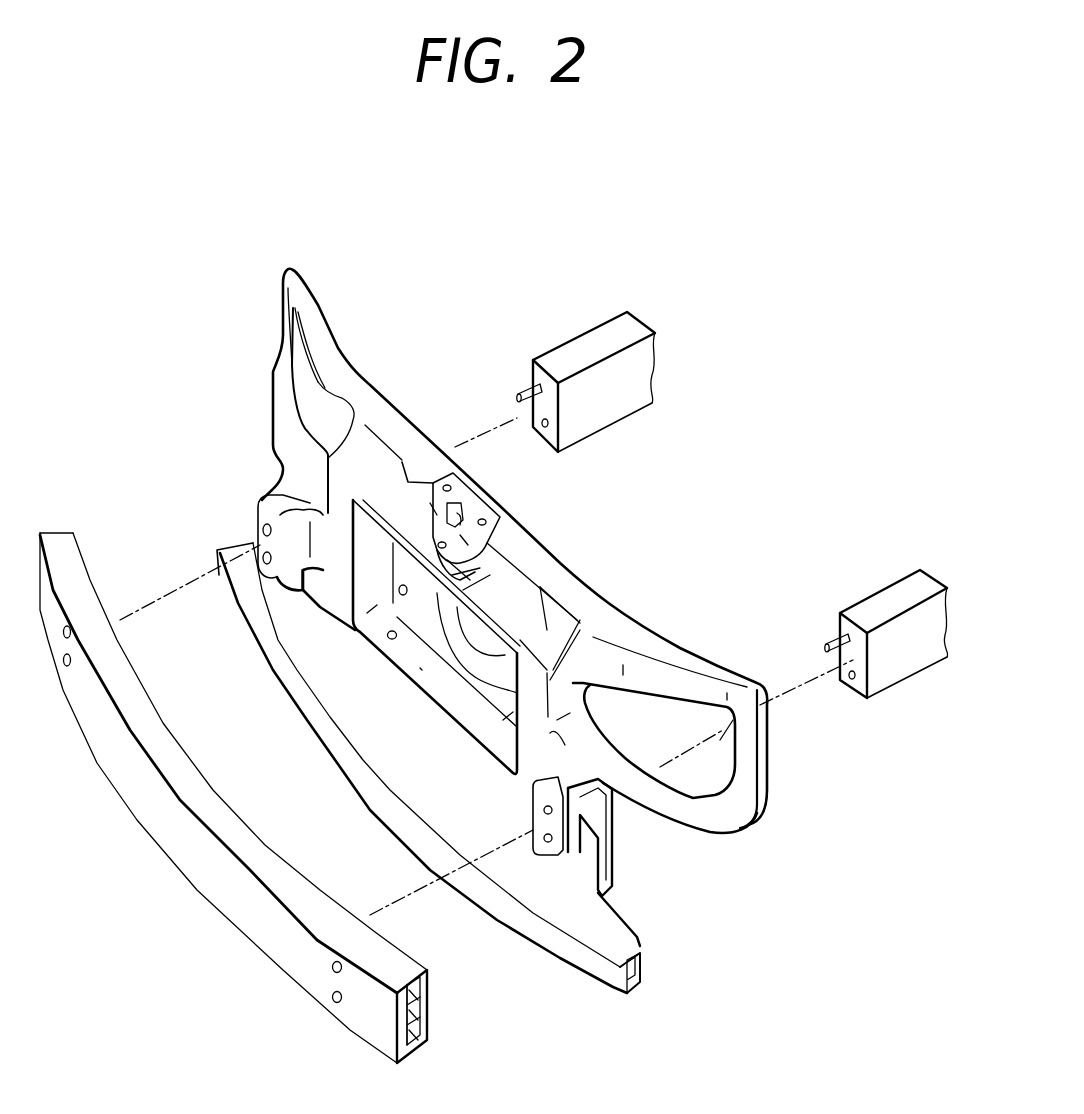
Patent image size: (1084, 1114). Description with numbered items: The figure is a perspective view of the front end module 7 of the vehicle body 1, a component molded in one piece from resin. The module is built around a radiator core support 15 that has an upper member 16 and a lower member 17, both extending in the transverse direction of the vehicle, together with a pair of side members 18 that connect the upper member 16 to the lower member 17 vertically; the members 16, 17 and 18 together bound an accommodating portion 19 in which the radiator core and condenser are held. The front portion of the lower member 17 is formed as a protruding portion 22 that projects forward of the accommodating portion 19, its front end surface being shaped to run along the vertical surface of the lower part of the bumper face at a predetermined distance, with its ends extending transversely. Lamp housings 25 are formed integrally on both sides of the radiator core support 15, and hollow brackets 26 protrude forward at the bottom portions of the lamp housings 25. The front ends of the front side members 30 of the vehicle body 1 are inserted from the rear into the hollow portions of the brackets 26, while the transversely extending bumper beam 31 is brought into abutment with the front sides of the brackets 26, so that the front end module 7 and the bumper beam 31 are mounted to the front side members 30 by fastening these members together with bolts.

The vehicle body 1 is at (624, 222).
The front end module 7 is at (438, 356).
The radiator core support 15 is at (552, 525).
The upper member 16 is at (540, 603).
The lower member 17 is at (458, 740).
The side members 18 is at (337, 542).
The accommodating portion 19 is at (415, 670).
The protruding portion 22 is at (388, 770).
The lamp housings 25 is at (283, 338).
The hollow brackets 26 is at (263, 516).
The front side members 30 is at (582, 350).
The bumper beam 31 is at (240, 917).